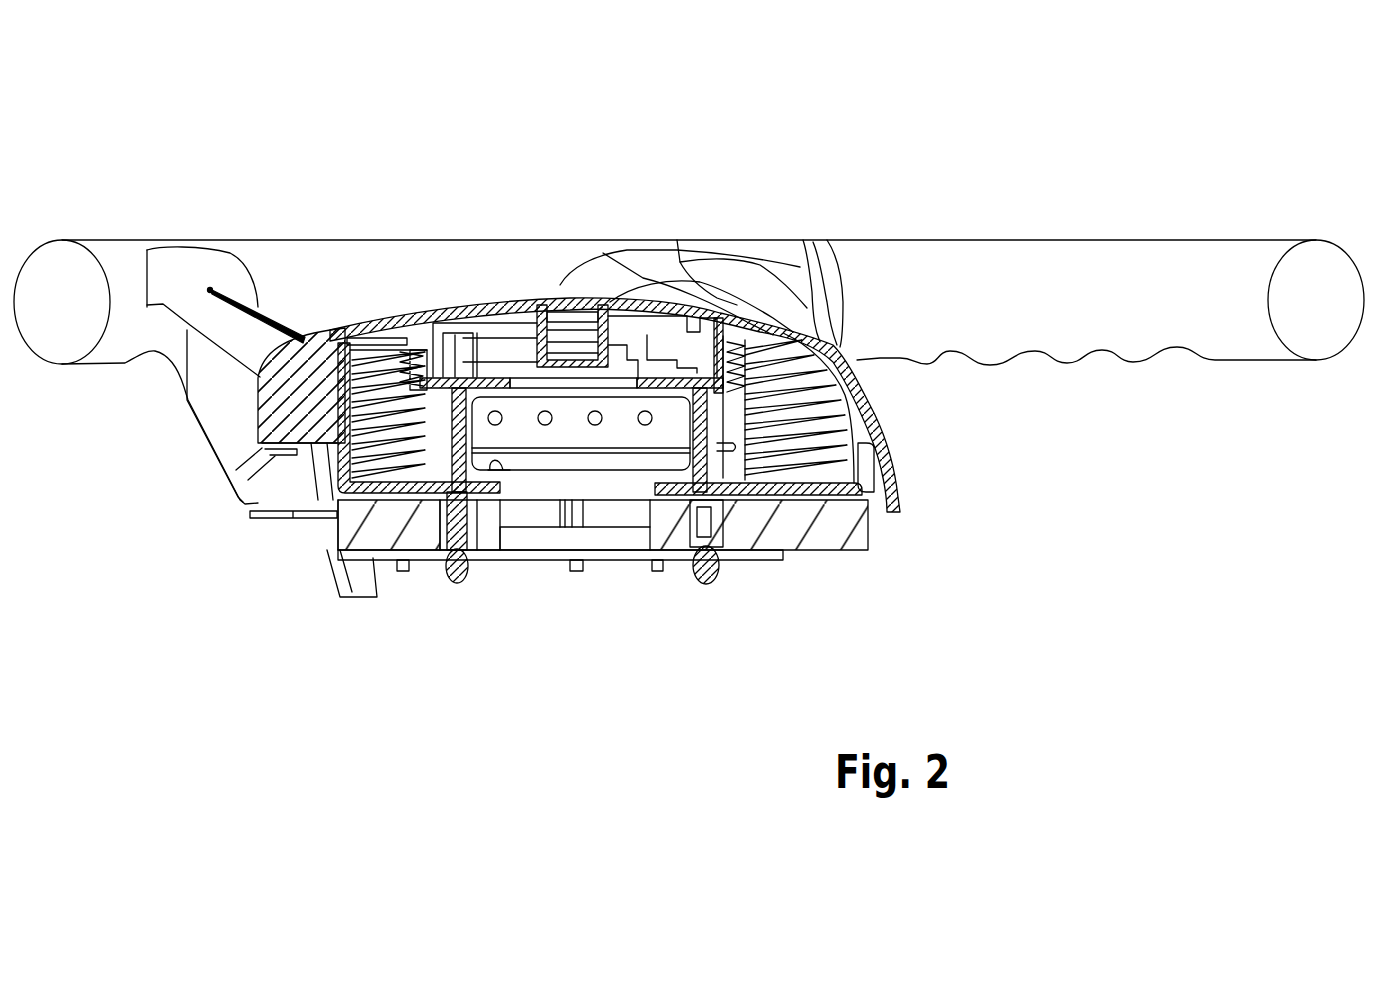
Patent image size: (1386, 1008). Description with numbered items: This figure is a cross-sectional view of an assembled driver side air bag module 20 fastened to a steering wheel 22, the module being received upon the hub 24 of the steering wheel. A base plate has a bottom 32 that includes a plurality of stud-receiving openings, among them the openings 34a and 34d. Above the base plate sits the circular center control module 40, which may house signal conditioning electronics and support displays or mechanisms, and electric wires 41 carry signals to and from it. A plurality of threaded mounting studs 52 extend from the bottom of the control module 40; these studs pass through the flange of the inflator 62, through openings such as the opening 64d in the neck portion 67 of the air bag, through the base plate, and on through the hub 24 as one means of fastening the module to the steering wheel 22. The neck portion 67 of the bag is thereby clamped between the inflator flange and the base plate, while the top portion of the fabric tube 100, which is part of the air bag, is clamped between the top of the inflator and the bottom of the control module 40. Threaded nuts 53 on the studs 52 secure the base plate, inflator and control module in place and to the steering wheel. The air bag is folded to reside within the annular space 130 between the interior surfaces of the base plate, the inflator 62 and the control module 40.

The driver side air bag module 20 is at (514, 298).
The steering wheel 22 is at (932, 270).
The hub 24 is at (810, 530).
The bottom 32 is at (748, 497).
The stud-receiving opening 34a is at (420, 505).
The stud-receiving opening 34d is at (698, 497).
The center control module 40 is at (476, 306).
The electric wires 41 is at (401, 498).
The threaded mounting studs 52 is at (463, 503).
The threaded nuts 53 is at (492, 503).
The inflator 62 is at (598, 462).
The opening in neck portion 64d is at (760, 470).
The neck portion 67 is at (345, 527).
The fabric tube 100 is at (498, 470).
The annular space 130 is at (867, 498).